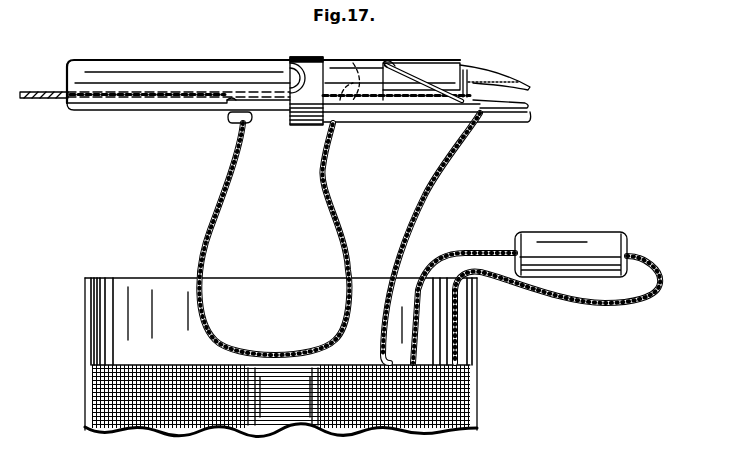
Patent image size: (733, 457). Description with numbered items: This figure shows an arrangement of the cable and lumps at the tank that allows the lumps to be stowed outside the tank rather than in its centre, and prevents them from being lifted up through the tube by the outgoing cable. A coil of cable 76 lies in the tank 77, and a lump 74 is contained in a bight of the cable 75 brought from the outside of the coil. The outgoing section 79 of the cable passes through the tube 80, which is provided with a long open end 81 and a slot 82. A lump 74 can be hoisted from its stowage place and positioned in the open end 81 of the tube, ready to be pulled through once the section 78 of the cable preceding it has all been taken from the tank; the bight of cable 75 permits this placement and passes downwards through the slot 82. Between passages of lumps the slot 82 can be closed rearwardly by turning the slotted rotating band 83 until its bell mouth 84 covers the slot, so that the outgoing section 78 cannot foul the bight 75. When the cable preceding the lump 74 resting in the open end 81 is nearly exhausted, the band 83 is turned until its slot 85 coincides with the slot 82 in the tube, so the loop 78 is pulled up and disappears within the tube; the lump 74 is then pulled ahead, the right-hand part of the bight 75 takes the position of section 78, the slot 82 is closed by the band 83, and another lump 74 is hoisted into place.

The lump 74 is at (440, 77).
The bight of the cable 75 is at (408, 213).
The coil of cable 76 is at (166, 364).
The tank 77 is at (281, 362).
The section of the cable preceding the lump 78 is at (218, 301).
The outgoing section of the cable 79 is at (43, 91).
The tube 80 is at (132, 58).
The open end of the tube 81 is at (392, 65).
The slot 82 is at (232, 102).
The slotted rotating band 83 is at (304, 58).
The bell mouth 84 is at (289, 66).
The slot of the band 85 is at (274, 233).